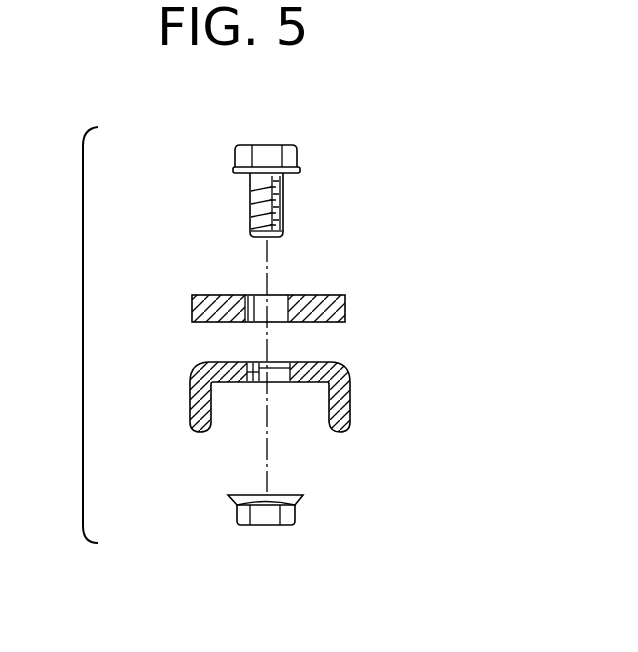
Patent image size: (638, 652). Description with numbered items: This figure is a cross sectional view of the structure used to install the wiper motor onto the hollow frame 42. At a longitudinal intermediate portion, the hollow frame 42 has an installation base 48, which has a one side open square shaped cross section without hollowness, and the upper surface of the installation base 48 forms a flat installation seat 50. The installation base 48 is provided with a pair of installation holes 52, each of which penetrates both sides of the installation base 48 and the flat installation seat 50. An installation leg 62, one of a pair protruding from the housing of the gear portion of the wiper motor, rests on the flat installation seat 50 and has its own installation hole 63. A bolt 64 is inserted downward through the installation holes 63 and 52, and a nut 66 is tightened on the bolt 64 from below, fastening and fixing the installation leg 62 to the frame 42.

The bolt 64 is at (270, 150).
The installation leg 62 is at (278, 258).
The installation hole 63 is at (283, 307).
The installation base 48 is at (307, 407).
The hollow frame 42 is at (307, 407).
The flat installation seat 50 is at (205, 364).
The installation hole 52 is at (277, 385).
The nut 66 is at (268, 523).